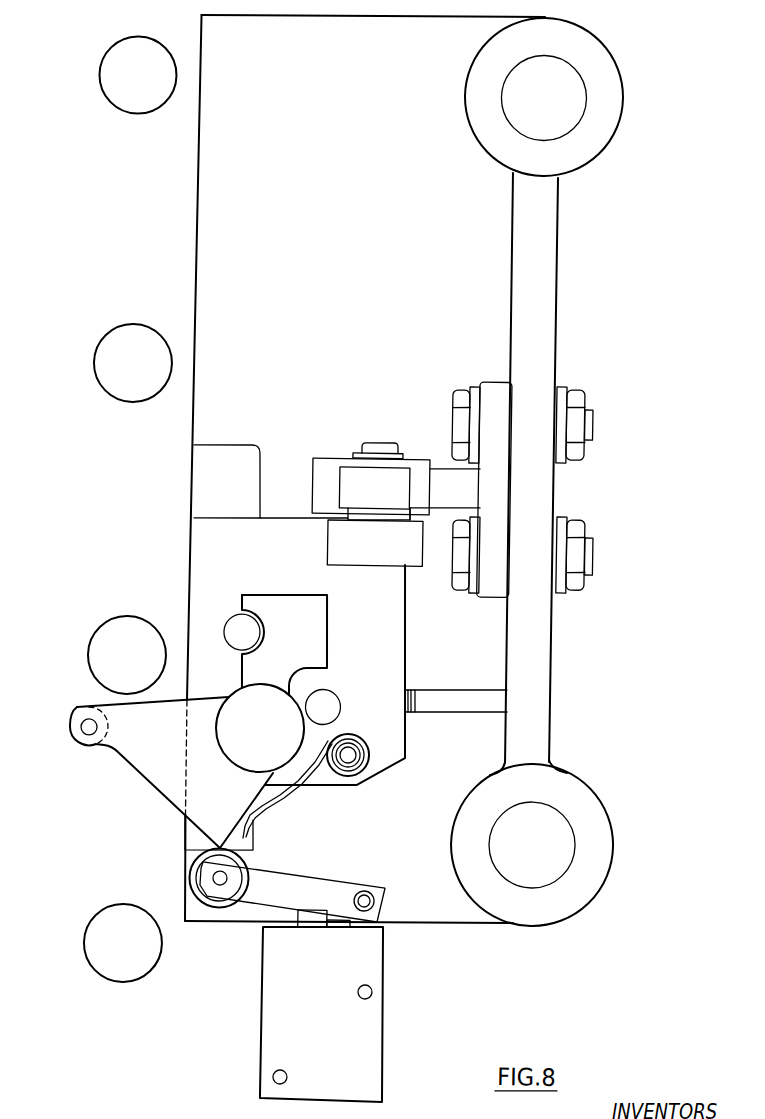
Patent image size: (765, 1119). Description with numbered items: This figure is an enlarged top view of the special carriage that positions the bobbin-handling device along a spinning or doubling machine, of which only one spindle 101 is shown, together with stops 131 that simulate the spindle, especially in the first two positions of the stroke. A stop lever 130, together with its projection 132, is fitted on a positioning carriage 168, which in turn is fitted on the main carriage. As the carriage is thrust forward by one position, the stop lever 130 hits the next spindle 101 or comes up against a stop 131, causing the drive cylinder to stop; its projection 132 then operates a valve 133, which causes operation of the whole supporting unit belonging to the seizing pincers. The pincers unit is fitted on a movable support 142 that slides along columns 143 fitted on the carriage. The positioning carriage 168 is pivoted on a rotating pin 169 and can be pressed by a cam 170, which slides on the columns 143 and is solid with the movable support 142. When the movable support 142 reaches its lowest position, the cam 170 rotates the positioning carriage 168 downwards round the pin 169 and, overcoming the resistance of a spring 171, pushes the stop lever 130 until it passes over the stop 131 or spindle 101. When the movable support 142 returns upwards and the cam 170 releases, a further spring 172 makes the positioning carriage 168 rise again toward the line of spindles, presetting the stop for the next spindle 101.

The spindle 101 is at (121, 218).
The stop lever 130 is at (137, 772).
The stop 131 is at (110, 799).
The projection or cam 132 is at (181, 861).
The valve 133 is at (346, 970).
The movable support 142 is at (523, 266).
The columns 143 is at (604, 814).
The positioning carriage 168 is at (329, 675).
The rotating pin 169 is at (371, 453).
The cam 170 is at (383, 461).
The spring 171 is at (297, 796).
The spring 172 is at (456, 685).